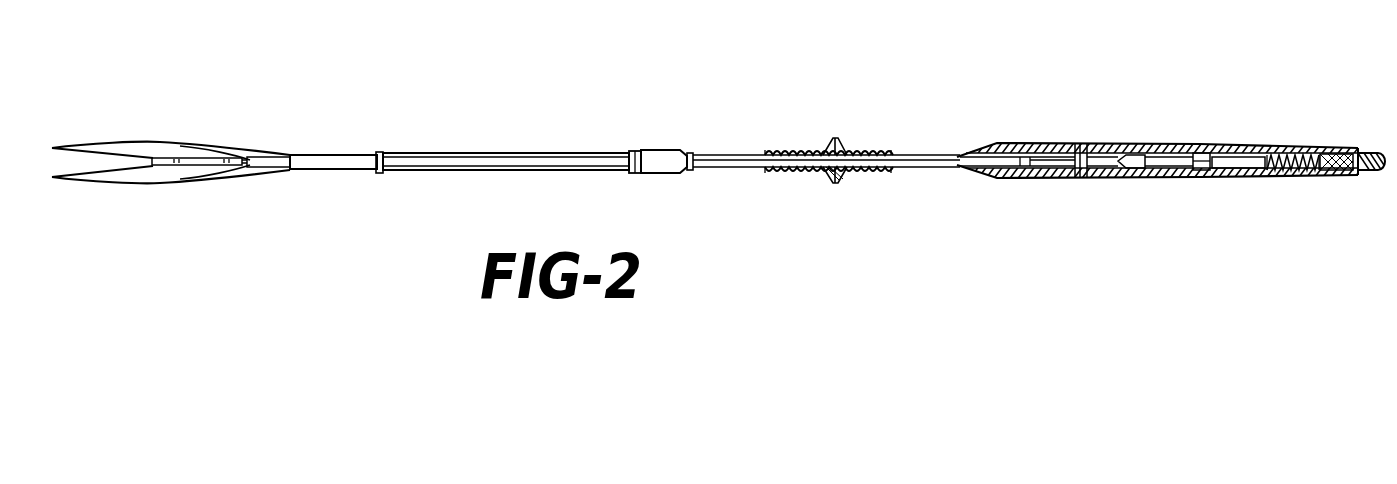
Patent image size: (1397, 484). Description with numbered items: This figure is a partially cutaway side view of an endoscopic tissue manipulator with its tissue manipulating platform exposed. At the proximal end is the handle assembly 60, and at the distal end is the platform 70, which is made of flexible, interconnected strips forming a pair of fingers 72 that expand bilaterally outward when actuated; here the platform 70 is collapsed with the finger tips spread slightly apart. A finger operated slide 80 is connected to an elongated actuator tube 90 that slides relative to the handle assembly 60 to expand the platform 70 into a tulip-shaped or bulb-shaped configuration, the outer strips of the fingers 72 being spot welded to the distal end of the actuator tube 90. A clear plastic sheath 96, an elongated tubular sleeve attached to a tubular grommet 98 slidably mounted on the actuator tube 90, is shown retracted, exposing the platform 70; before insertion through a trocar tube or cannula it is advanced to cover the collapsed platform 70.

The handle assembly 60 is at (1235, 144).
The platform 70 is at (171, 160).
The fingers 72 is at (100, 143).
The finger slide 80 is at (782, 148).
The actuator tube 90 is at (337, 160).
The sheath 96 is at (493, 158).
The grommet 98 is at (662, 158).